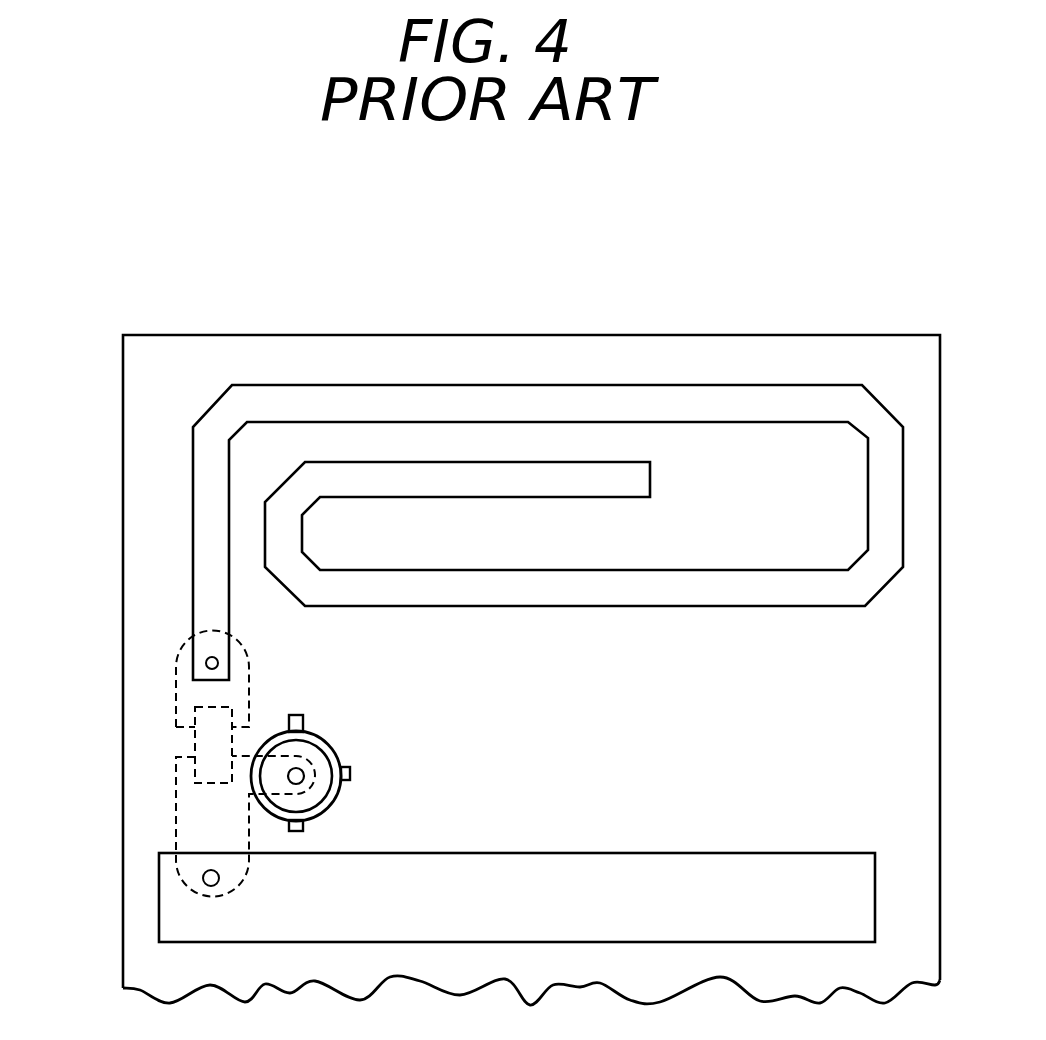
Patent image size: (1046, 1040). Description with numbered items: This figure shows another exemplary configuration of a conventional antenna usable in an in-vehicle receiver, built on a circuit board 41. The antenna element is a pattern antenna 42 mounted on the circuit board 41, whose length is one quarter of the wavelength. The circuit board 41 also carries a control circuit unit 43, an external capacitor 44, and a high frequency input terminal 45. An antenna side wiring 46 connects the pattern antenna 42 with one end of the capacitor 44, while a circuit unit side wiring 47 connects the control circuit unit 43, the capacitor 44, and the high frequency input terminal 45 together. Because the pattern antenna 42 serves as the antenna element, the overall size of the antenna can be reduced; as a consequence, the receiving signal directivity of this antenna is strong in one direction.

The circuit board 41 is at (664, 353).
The pattern antenna 42 is at (715, 593).
The control circuit unit 43 is at (614, 863).
The external capacitor 44 is at (193, 740).
The high frequency input terminal 45 is at (332, 745).
The antenna side wiring 46 is at (176, 665).
The circuit unit side wiring 47 is at (176, 814).